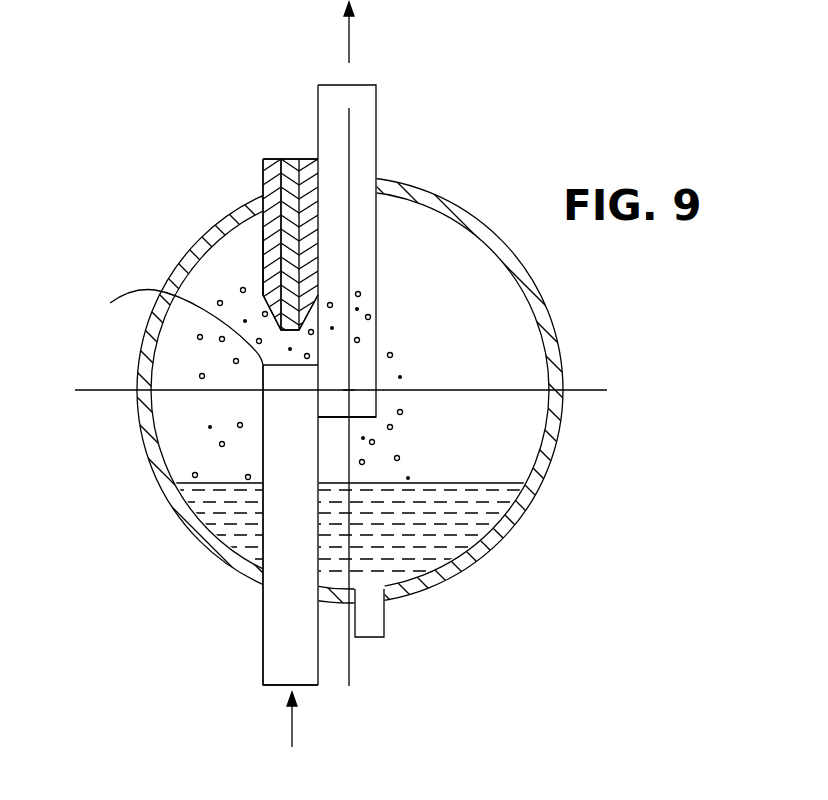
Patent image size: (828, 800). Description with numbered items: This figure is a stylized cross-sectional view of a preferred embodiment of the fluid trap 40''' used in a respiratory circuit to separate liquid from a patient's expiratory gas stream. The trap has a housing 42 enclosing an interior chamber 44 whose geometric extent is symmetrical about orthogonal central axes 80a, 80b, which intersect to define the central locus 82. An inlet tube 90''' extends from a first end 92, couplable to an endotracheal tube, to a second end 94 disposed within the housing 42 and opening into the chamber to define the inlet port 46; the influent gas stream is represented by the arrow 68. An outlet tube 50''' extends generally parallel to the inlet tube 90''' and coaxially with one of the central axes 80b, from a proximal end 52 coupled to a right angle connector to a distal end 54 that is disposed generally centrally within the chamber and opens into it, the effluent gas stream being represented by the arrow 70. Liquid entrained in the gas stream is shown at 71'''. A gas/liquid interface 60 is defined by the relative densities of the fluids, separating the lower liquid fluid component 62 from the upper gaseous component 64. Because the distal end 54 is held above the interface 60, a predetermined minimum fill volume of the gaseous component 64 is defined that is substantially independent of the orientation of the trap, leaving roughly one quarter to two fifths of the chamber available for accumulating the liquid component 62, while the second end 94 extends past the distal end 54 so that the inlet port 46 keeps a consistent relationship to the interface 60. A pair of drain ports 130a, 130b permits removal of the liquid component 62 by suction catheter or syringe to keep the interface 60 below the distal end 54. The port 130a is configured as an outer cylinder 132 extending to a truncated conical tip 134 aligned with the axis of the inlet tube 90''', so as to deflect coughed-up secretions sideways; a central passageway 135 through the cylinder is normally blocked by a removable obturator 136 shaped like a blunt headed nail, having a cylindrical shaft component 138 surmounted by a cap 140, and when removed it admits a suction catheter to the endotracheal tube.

The fluid trap 40''' is at (369, 374).
The housing 42 is at (555, 325).
The interior chamber 44 is at (438, 264).
The inlet port 46 is at (167, 327).
The outlet tube 50''' is at (391, 385).
The proximal end 52 is at (360, 85).
The distal end 54 is at (362, 420).
The gas/liquid interface 60 is at (181, 483).
The liquid fluid component 62 is at (483, 528).
The gaseous component 64 is at (487, 378).
The influent gas stream arrow 68 is at (292, 742).
The effluent gas stream arrow 70 is at (350, 38).
The entrained liquid 71''' is at (249, 384).
The central axis 80a is at (587, 390).
The central axis 80b is at (350, 128).
The central locus 82 is at (349, 385).
The inlet tube 90''' is at (241, 525).
The first end 92 is at (263, 688).
The second end 94 is at (263, 368).
The drain port 130a is at (262, 173).
The drain port 130b is at (380, 618).
The outer cylinder 132 is at (263, 258).
The truncated conical tip 134 is at (272, 261).
The passageway 135 is at (263, 212).
The obturator 136 is at (290, 133).
The cylindrical shaft component 138 is at (290, 235).
The cap 140 is at (277, 158).